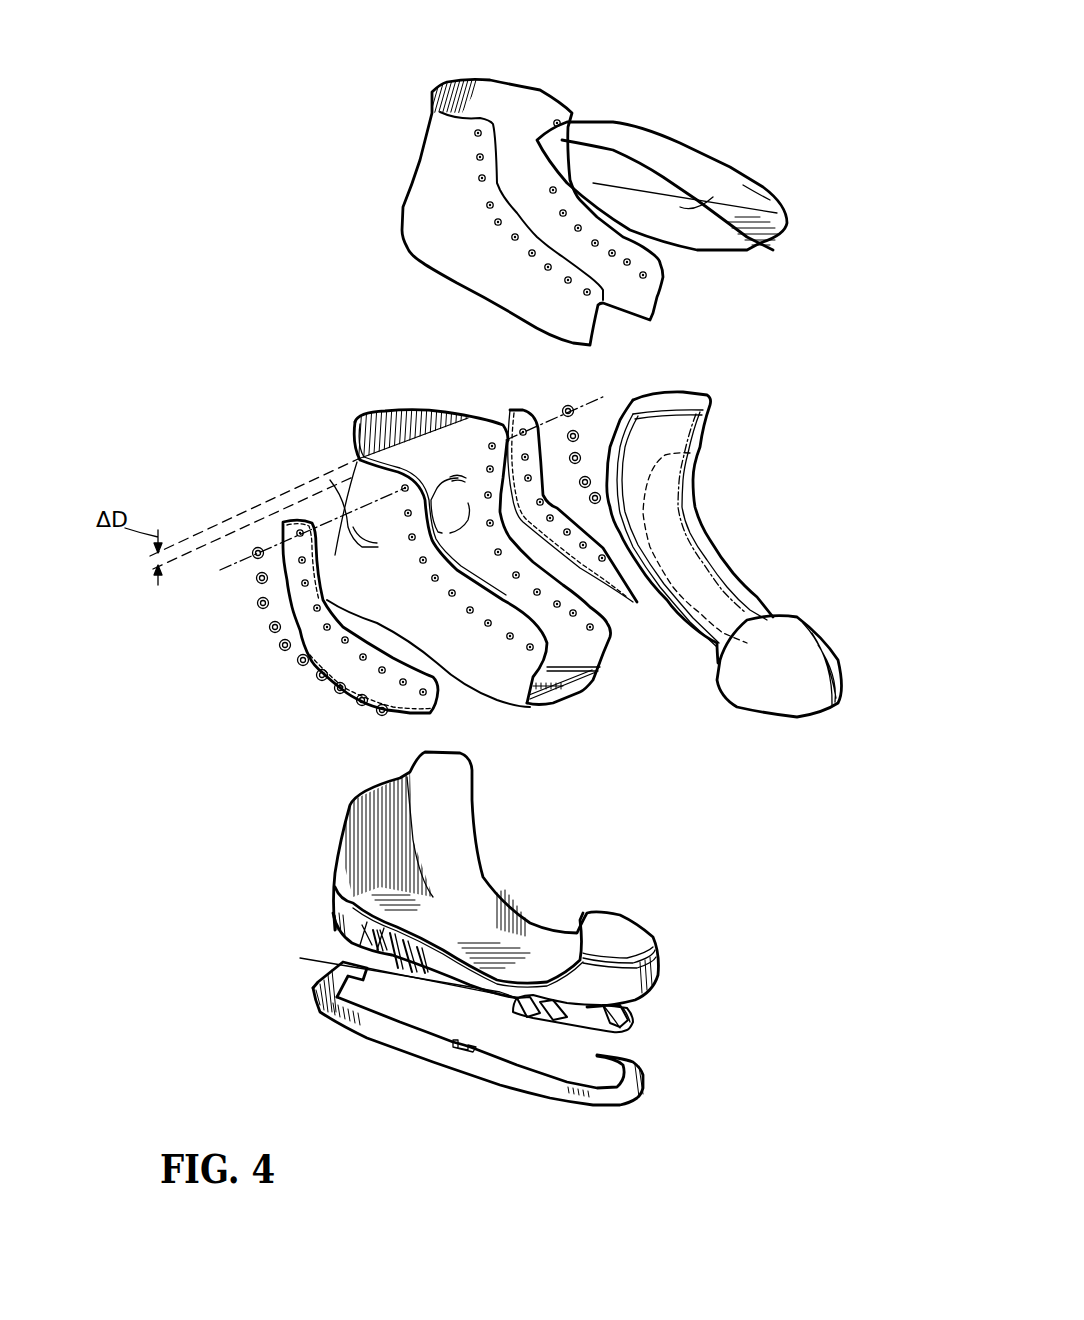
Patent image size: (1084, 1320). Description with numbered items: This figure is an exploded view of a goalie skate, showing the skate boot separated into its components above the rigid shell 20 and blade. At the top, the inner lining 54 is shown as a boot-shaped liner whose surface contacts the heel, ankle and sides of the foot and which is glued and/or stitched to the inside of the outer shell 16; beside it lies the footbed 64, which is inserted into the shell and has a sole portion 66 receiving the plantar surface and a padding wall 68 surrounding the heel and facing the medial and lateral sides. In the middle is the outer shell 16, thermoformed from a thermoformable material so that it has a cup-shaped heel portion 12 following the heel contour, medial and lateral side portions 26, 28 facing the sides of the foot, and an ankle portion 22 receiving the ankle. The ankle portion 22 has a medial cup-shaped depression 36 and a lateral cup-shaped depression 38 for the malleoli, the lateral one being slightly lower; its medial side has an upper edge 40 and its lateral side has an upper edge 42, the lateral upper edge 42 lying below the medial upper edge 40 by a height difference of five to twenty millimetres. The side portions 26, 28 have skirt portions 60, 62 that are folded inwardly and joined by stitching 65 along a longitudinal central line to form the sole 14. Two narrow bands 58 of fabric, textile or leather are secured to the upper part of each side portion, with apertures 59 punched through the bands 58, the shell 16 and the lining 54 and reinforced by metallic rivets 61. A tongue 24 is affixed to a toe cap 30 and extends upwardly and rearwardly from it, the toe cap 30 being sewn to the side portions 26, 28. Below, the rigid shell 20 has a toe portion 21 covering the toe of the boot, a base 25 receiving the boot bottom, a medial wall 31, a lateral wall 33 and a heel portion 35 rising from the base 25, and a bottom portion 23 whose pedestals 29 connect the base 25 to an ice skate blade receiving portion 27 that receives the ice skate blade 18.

The heel portion 12 is at (327, 553).
The sole 14 is at (577, 680).
The outer shell 16 is at (380, 413).
The ice skate blade 18 is at (627, 1082).
The rigid shell 20 is at (357, 797).
The toe portion 21 is at (603, 933).
The ankle portion 22 is at (378, 503).
The bottom portion 23 is at (613, 1007).
The tongue 24 is at (680, 533).
The base 25 is at (470, 930).
The medial side portion 26 is at (612, 625).
The ice skate blade receiving portion 27 is at (620, 1022).
The lateral side portion 28 is at (430, 607).
The pedestals 29 is at (370, 950).
The toe cap 30 is at (790, 643).
The medial wall 31 is at (543, 913).
The lateral wall 33 is at (340, 927).
The heel portion 35 is at (343, 883).
The medial cup-shaped depression 36 is at (450, 510).
The lateral cup-shaped depression 38 is at (360, 530).
The upper edge 40 is at (485, 423).
The upper edge 42 is at (397, 467).
The inner lining 54 is at (437, 170).
The narrow bands 58 is at (287, 532).
The apertures 59 is at (297, 533).
The medial skirt portion 60 is at (593, 687).
The metallic rivets 61 is at (258, 552).
The lateral skirt portion 62 is at (552, 707).
The footbed 64 is at (673, 140).
The stitching 65 is at (575, 690).
The sole portion 66 is at (760, 223).
The padding wall 68 is at (693, 213).